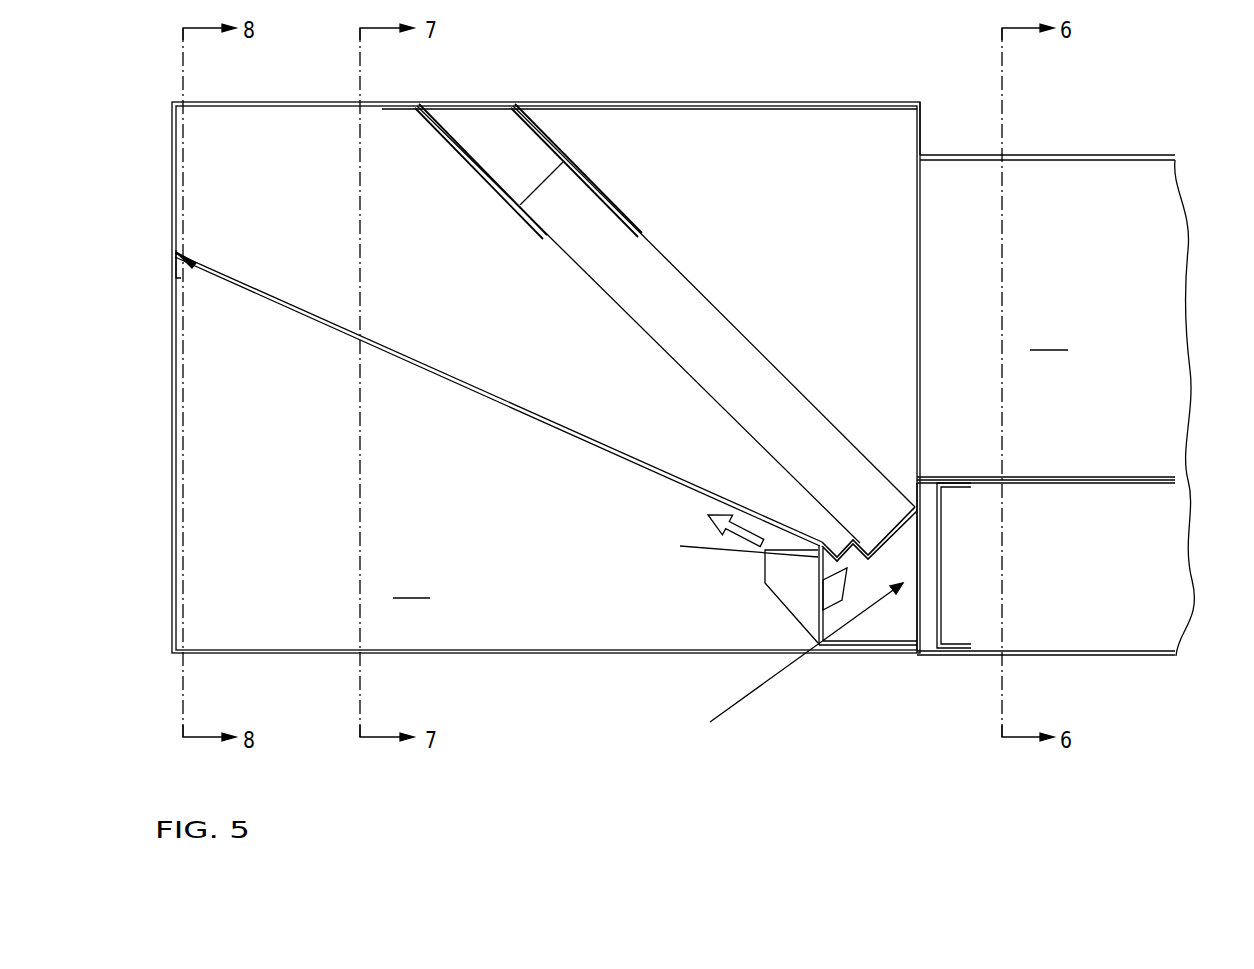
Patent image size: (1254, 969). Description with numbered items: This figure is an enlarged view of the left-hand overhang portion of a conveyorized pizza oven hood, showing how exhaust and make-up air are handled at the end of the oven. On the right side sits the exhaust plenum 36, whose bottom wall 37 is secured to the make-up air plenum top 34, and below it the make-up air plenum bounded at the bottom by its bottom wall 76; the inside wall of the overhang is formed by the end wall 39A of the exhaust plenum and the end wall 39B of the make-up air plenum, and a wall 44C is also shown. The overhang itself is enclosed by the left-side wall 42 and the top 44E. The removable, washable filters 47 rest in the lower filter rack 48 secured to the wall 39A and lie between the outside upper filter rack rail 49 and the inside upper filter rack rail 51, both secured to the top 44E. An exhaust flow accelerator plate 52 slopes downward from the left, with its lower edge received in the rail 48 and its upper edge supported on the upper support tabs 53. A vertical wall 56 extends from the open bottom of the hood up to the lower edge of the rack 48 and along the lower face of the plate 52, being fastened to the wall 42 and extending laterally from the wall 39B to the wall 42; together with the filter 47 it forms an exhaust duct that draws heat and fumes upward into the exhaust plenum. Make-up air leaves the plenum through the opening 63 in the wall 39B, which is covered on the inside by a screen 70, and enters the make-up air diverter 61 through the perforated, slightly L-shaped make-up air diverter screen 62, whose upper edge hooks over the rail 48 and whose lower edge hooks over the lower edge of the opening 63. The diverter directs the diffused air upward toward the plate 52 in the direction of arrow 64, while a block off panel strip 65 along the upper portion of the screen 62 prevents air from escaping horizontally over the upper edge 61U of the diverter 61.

The make-up air plenum top 34 is at (1046, 521).
The exhaust plenum 36 is at (1112, 408).
The exhaust plenum bottom wall 37 is at (1046, 447).
The end wall of the exhaust plenum 39A is at (1033, 112).
The end wall of the make-up air plenum 39B is at (842, 628).
The left-side wall 42 is at (546, 377).
The top wall 44C is at (1065, 134).
The top 44E is at (649, 62).
The filters 47 is at (666, 324).
The lower filter rack 48 is at (850, 408).
The outside upper filter rack rail 49 is at (461, 173).
The inside upper filter rack rail 51 is at (542, 138).
The exhaust flow accelerator plate 52 is at (498, 399).
The upper support tabs 53 is at (215, 296).
The vertical wall 56 is at (411, 584).
The make-up air diverter 61 is at (734, 594).
The upper edge of diverter 61U is at (741, 589).
The make-up air diverter screen 62 is at (791, 622).
The opening 63 is at (784, 659).
The arrow 64 is at (719, 523).
The block off panel strip 65 is at (676, 763).
The screen 70 is at (985, 663).
The bottom wall 76 is at (1046, 622).